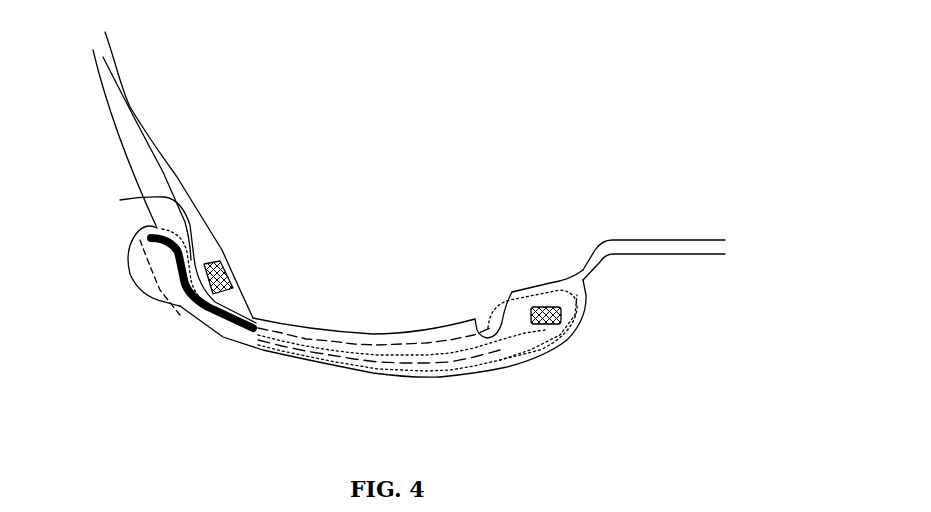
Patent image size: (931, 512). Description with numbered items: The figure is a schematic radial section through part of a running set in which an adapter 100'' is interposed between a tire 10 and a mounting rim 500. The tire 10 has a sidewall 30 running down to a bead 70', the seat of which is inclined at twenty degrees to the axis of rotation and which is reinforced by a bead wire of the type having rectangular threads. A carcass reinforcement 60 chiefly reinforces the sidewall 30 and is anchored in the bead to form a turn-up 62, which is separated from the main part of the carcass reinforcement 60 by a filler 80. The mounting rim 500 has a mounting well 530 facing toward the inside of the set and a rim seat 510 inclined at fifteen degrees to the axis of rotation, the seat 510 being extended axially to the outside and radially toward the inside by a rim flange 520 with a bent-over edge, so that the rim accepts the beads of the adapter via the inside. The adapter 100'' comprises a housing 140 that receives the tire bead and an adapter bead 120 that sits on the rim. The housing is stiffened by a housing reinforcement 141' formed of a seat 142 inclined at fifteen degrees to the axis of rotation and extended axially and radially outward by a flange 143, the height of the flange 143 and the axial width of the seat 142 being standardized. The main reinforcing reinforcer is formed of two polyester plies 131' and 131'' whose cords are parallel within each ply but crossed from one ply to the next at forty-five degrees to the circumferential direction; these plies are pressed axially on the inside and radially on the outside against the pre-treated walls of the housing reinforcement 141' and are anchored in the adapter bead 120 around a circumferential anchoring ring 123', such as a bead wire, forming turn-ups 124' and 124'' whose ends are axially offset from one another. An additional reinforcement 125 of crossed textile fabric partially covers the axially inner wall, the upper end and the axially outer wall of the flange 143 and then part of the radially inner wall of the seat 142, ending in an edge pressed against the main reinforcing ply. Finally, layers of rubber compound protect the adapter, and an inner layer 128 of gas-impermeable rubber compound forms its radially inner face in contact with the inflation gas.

The tire 10 is at (165, 113).
The sidewall 30 is at (107, 91).
The carcass reinforcement 60 is at (187, 195).
The turn-up 62 is at (150, 197).
The filler 80 is at (197, 223).
The bead 70' is at (243, 266).
The adapter 100'' is at (416, 234).
The adapter bead 120 is at (583, 292).
The circumferential anchoring ring 123' is at (597, 327).
The turn-up 124' is at (374, 319).
The turn-up 124'' is at (401, 375).
The additional reinforcement 125 is at (263, 337).
The inner layer of gas-impermeable rubber compound 128 is at (360, 336).
The ply of textile cords 131' is at (379, 373).
The ply of textile cords 131'' is at (427, 325).
The housing 140 is at (180, 312).
The housing reinforcement 141' is at (139, 277).
The seat 142 is at (220, 328).
The flange 143 is at (148, 243).
The mounting rim 500 is at (653, 247).
The rim seat 510 is at (545, 291).
The rim flange 520 is at (500, 320).
The mounting well 530 is at (687, 280).